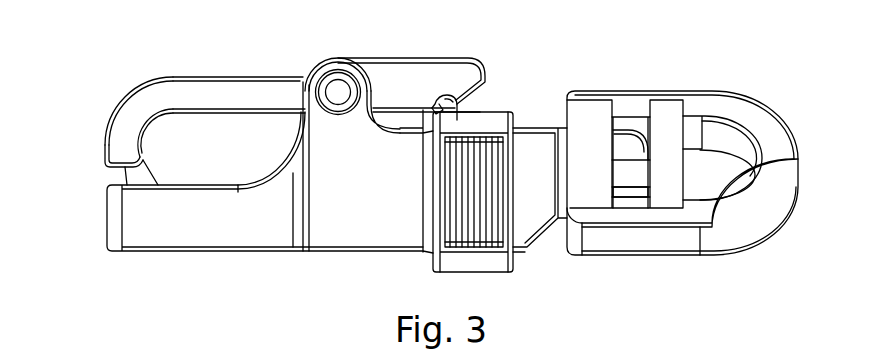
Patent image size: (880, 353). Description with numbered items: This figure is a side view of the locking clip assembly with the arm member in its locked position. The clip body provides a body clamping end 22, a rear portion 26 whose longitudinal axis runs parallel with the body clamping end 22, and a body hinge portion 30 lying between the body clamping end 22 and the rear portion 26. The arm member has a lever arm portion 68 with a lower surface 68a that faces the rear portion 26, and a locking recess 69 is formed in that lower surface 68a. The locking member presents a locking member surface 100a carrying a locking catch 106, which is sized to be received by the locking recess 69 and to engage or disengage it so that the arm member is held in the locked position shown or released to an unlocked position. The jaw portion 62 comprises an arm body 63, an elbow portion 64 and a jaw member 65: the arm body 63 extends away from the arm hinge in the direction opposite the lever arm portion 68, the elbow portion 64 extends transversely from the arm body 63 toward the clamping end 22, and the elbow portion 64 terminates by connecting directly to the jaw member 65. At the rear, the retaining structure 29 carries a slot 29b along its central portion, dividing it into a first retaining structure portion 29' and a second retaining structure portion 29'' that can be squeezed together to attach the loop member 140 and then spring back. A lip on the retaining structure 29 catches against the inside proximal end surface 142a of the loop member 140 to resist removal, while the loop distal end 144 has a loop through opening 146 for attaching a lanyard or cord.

The body clamping end 22 is at (190, 253).
The rear portion 26 is at (543, 233).
The retaining structure 29 is at (625, 113).
The first retaining structure portion 29' is at (647, 107).
The second retaining structure portion 29'' is at (643, 256).
The slot 29b is at (632, 172).
The body hinge portion 30 is at (352, 253).
The jaw portion 62 is at (263, 77).
The arm body 63 is at (222, 77).
The elbow portion 64 is at (115, 110).
The jaw member 65 is at (118, 177).
The lever arm portion 68 is at (480, 60).
The lower surface 68a is at (403, 113).
The locking recess 69 is at (457, 97).
The locking member surface 100a is at (495, 108).
The locking catch 106 is at (433, 108).
The loop member 140 is at (774, 108).
The inside proximal end surface 142a is at (692, 143).
The loop distal end 144 is at (800, 160).
The loop through opening 146 is at (727, 170).